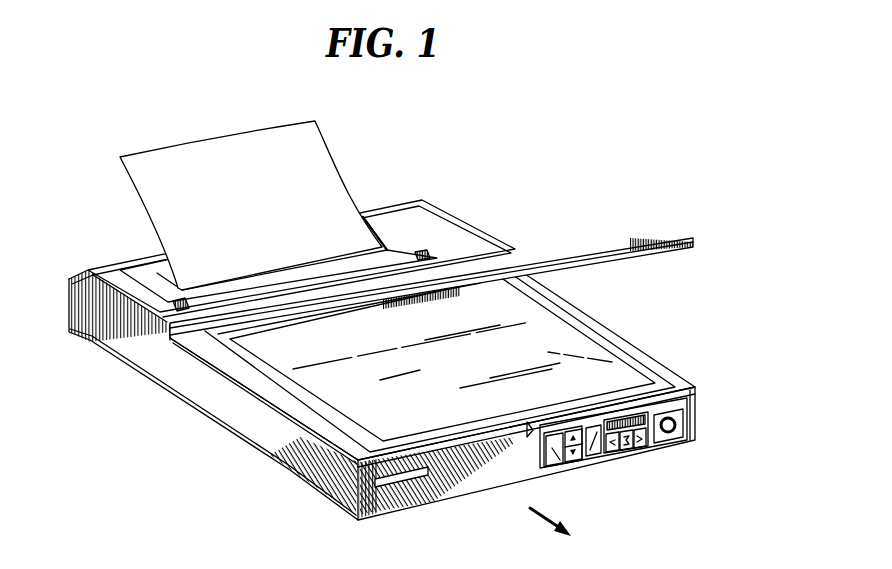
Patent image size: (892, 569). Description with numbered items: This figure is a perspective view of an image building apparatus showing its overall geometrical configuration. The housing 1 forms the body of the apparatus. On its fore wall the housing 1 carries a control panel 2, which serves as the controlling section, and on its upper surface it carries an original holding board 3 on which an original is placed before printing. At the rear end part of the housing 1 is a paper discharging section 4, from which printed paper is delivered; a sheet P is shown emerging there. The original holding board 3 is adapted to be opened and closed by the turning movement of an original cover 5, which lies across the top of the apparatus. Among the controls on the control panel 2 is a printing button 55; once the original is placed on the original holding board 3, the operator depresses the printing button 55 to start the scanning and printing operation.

The housing 1 is at (582, 309).
The control panel 2 is at (643, 444).
The original holding board 3 is at (307, 376).
The paper discharging section 4 is at (381, 247).
The original cover 5 is at (555, 262).
The printing button 55 is at (682, 420).
The document sheet P is at (322, 156).